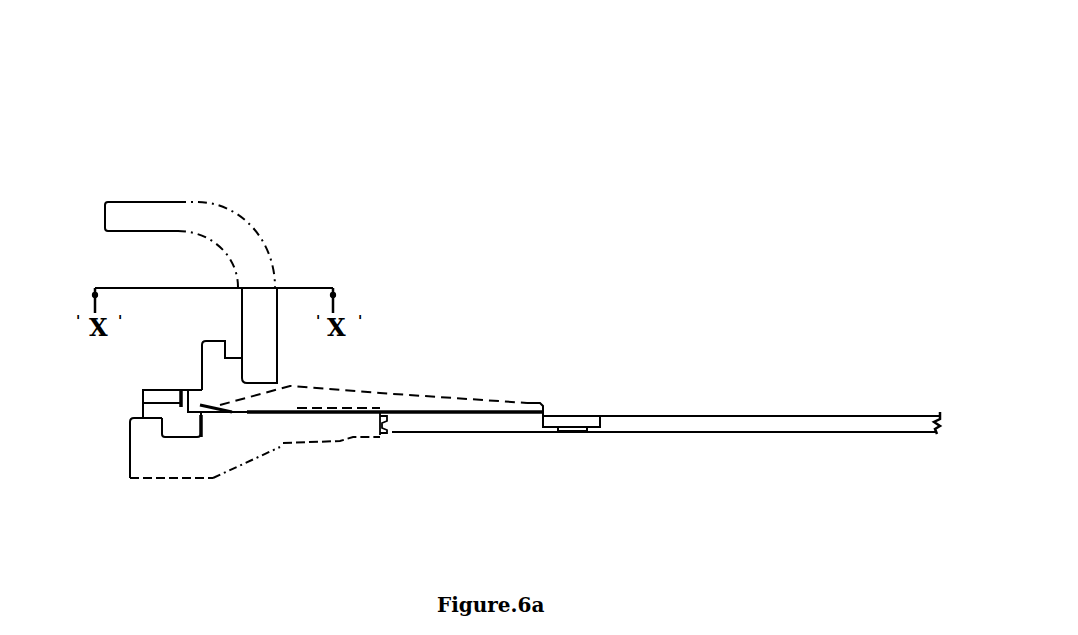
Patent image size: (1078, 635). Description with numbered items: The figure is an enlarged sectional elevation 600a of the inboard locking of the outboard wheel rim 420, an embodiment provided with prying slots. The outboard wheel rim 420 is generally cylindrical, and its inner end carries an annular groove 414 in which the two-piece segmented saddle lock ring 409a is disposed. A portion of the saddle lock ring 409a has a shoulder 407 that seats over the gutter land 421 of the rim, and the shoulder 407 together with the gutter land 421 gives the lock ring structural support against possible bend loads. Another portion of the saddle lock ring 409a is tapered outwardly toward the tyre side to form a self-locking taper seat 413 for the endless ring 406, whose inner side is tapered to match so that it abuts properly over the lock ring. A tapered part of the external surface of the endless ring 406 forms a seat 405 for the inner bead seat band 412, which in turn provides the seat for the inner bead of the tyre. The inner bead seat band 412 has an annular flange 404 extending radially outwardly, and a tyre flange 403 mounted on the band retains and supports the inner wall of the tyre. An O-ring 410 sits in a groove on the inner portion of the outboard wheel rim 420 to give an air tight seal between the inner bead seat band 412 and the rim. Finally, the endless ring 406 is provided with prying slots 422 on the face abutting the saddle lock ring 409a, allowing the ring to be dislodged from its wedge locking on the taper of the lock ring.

The enlarged sectional elevation 600a is at (172, 75).
The tyre flange 403 is at (108, 202).
The annular flange 404 is at (217, 405).
The seat 405 is at (270, 385).
The endless ring 406 is at (198, 403).
The shoulder 407 is at (146, 392).
The prying slots 422 is at (176, 403).
The self-locking taper seat 413 is at (197, 417).
The gutter land 421 is at (142, 455).
The two-piece segmented saddle lock ring 409a is at (182, 434).
The annular groove 414 is at (203, 437).
The O-ring 410 is at (255, 422).
The inner bead seat band 412 is at (457, 408).
The outboard wheel rim 420 is at (477, 428).